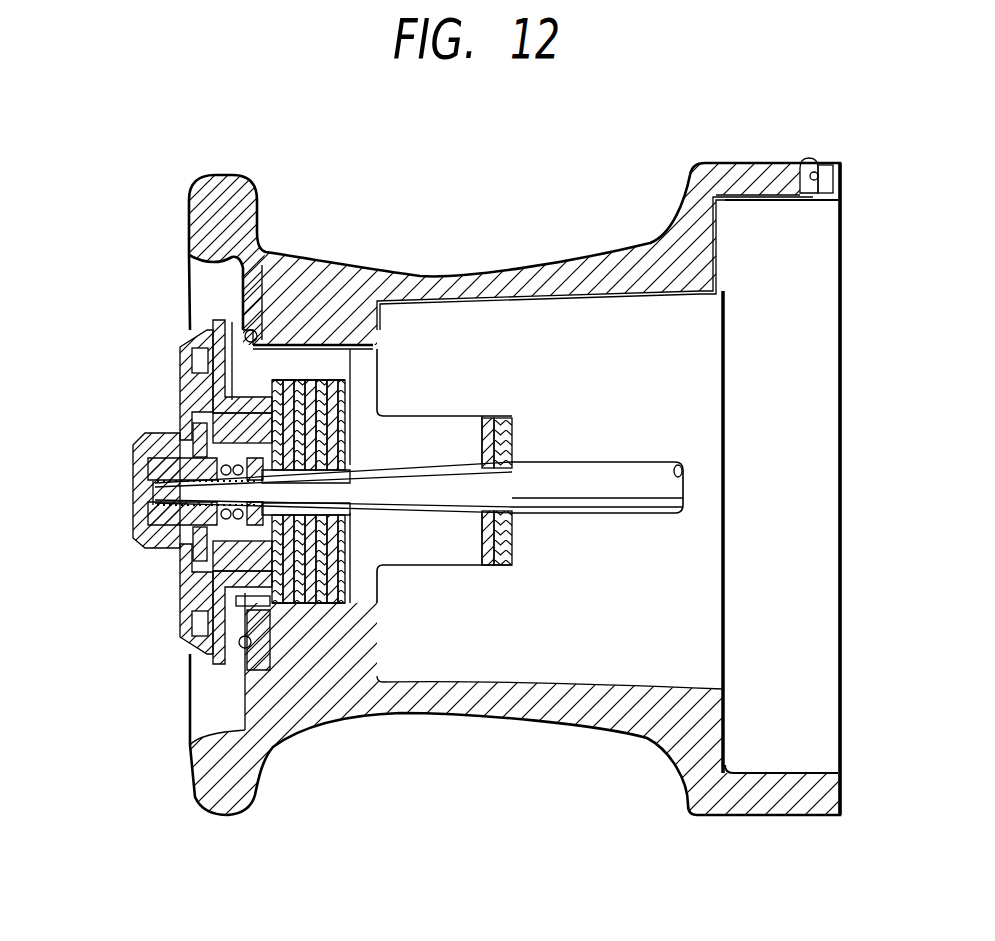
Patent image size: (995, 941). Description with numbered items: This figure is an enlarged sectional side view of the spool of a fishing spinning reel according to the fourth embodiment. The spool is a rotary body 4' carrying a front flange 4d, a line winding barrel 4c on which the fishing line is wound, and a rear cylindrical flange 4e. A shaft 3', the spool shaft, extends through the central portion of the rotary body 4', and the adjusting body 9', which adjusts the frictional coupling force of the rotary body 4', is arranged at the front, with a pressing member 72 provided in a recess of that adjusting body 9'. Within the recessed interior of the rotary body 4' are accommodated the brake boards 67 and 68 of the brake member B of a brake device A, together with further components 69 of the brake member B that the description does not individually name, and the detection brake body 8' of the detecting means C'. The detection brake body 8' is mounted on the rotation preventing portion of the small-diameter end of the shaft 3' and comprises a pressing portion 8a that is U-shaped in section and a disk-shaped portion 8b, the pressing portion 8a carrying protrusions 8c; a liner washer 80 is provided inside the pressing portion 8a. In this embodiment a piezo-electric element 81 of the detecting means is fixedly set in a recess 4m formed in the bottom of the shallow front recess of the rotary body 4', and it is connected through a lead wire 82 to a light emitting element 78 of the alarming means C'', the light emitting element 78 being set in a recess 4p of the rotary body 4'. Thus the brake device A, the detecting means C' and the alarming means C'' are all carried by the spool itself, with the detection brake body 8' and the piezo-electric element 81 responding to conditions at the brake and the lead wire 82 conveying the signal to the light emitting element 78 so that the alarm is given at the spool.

The rotary body 4' is at (476, 474).
The front flange 4d is at (226, 178).
The recess 4m is at (263, 290).
The line winding barrel 4c is at (556, 266).
The rear cylindrical flange 4e is at (828, 163).
The recess 4p is at (819, 177).
The lead wire 82 is at (477, 292).
The light emitting element 78 is at (805, 160).
The alarming means C'' is at (819, 111).
The detecting means C' is at (171, 264).
The brake device A is at (145, 362).
The brake member B is at (297, 366).
The piezo-electric element 81 is at (245, 332).
The disk-shaped portion 8b is at (212, 324).
The detection brake body 8' is at (190, 633).
The pressing portion 8a is at (250, 602).
The protrusions 8c is at (268, 700).
The pressing member 72 is at (178, 403).
The adjusting body 9' is at (197, 490).
The liner washer 80 is at (248, 568).
The brake board 68 is at (314, 370).
The clutch plate 69 is at (318, 610).
The brake board 67 is at (290, 610).
The shaft 3' is at (418, 529).